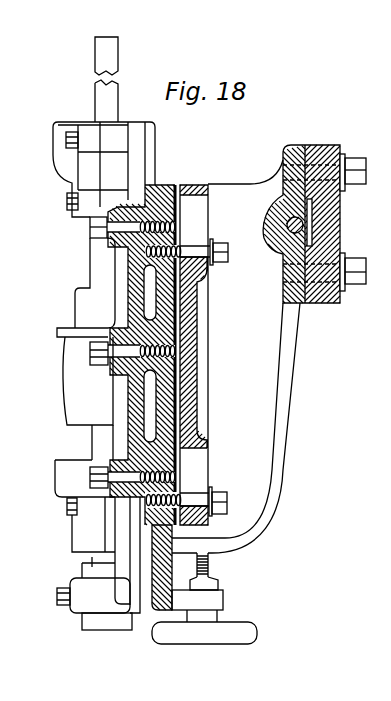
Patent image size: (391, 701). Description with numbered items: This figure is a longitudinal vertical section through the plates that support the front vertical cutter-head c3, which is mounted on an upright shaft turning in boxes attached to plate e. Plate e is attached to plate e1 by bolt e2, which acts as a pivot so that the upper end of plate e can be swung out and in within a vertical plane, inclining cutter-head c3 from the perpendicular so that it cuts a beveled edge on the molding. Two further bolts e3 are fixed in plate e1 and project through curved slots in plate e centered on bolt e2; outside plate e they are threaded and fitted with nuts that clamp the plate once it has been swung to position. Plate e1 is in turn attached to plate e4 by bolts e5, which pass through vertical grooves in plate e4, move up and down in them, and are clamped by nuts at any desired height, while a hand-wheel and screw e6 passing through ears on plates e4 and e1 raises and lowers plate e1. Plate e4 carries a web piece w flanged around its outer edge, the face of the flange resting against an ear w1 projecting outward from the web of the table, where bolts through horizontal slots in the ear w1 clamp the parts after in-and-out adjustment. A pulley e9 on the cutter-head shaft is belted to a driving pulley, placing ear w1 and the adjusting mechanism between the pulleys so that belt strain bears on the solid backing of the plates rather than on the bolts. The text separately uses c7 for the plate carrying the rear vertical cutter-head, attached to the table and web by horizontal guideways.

The front vertical cutter-head c3 is at (116, 79).
The plate e1 is at (166, 185).
The plate e is at (151, 603).
The plate e4 is at (203, 182).
The bolts e3 is at (89, 231).
The bolt e2 is at (90, 477).
The bolts e5 is at (228, 255).
The pulley e9 is at (64, 395).
The web piece w is at (276, 361).
The ear w1 is at (324, 145).
The plate c7 is at (327, 217).
The hand-wheel and screw e6 is at (223, 583).